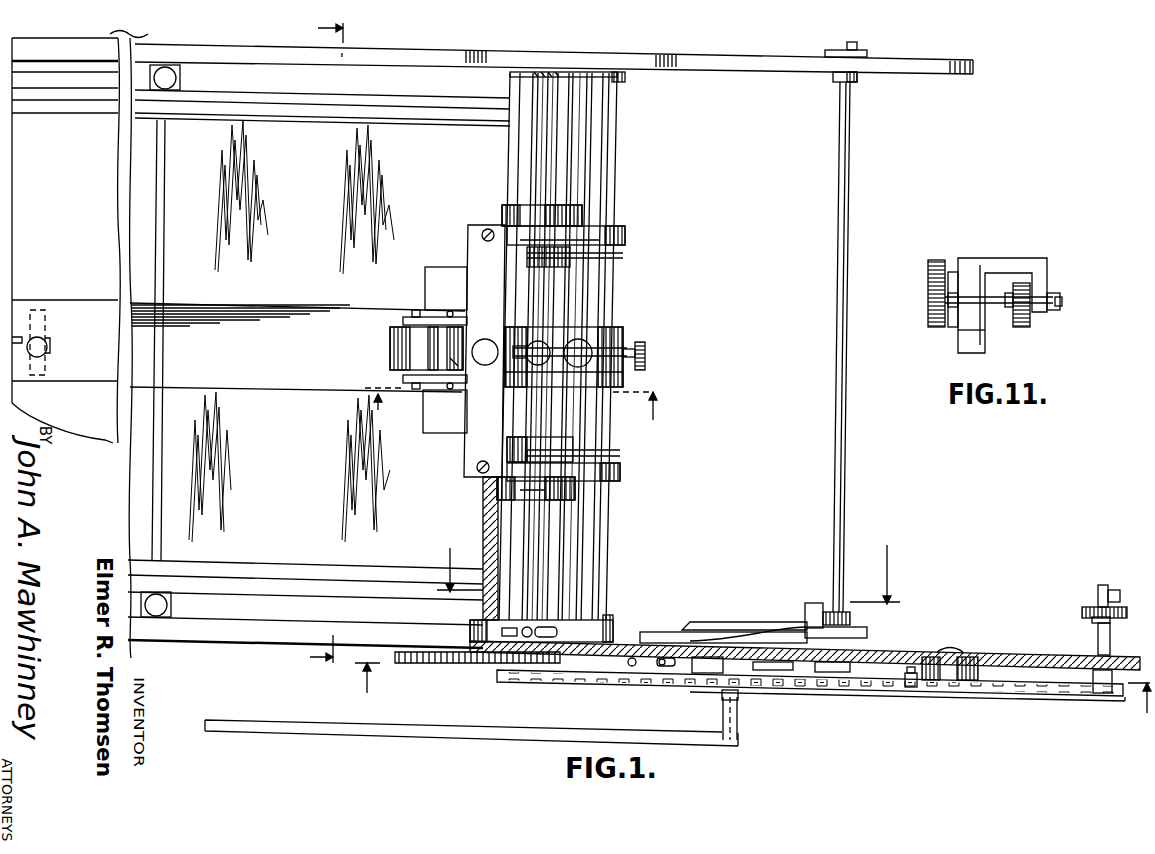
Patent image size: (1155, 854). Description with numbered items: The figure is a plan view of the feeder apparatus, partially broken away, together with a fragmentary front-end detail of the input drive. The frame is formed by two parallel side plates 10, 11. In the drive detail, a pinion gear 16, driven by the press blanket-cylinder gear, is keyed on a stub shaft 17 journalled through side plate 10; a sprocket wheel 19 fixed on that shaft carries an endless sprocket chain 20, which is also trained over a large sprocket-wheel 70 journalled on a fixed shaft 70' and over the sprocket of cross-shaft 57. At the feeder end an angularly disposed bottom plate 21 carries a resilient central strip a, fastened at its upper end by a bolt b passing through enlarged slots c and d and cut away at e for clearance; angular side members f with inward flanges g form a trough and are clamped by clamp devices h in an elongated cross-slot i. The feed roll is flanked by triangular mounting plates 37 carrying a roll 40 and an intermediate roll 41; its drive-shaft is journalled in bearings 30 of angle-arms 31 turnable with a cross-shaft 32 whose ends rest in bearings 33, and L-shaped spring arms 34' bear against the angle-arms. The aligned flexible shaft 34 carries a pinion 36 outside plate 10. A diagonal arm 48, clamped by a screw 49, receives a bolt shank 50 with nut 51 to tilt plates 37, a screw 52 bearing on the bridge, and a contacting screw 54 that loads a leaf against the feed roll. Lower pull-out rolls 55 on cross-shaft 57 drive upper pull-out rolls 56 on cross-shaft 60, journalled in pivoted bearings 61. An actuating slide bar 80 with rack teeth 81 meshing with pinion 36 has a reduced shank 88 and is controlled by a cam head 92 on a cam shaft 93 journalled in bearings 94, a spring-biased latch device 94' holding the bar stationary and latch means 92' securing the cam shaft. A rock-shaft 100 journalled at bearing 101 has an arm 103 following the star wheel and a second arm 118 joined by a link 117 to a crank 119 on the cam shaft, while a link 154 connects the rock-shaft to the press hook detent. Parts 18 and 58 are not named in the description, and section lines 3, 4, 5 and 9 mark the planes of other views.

In FIG. 1, the side plate 10 is at (882, 653).
In FIG. 11, the side plate 10 is at (960, 345).
In FIG. 1, the side plate 11 is at (792, 68).
In FIG. 1, the pinion gear 16 is at (1098, 603).
In FIG. 11, the pinion gear 16 is at (1022, 322).
In FIG. 1, the stub shaft 17 is at (1098, 632).
In FIG. 11, the stub shaft 17 is at (1000, 308).
In FIG. 1, the bracket 18 is at (1128, 590).
In FIG. 11, the bracket 18 is at (985, 272).
In FIG. 1, the sprocket wheel 19 is at (1100, 700).
In FIG. 1, the sprocket chain 20 is at (1045, 694).
In FIG. 11, the sprocket chain 20 is at (928, 302).
In FIG. 1, the bottom plate 21 is at (291, 331).
In FIG. 1, the bearings 30 is at (620, 473).
In FIG. 1, the angle-arms 31 is at (565, 490).
In FIG. 1, the cross-shaft 32 is at (598, 548).
In FIG. 1, the bearings 33 is at (608, 628).
In FIG. 1, the flexible shaft 34 is at (479, 548).
In FIG. 1, the L-shaped spring arms 34' is at (577, 354).
In FIG. 1, the pinion 36 is at (492, 664).
In FIG. 1, the mounting plates 37 is at (422, 394).
In FIG. 1, the roll 40 is at (398, 350).
In FIG. 1, the intermediate roll 41 is at (452, 365).
In FIG. 1, the diagonal arm 48 is at (516, 335).
In FIG. 1, the screw 49 is at (648, 352).
In FIG. 1, the bolt shank 50 is at (553, 345).
In FIG. 1, the nut 51 is at (548, 370).
In FIG. 1, the screw 52 is at (487, 345).
In FIG. 1, the contacting screw 54 is at (590, 352).
In FIG. 1, the lower pull-out rolls 55 is at (500, 505).
In FIG. 1, the upper pull-out rolls 56 is at (547, 500).
In FIG. 1, the cross-shaft 57 is at (522, 583).
In FIG. 1, the carriage base 58 is at (498, 632).
In FIG. 1, the cross-shaft 60 is at (553, 595).
In FIG. 1, the bearings 61 is at (560, 72).
In FIG. 1, the large sprocket-wheel 70 is at (922, 696).
In FIG. 1, the fixed shaft 70' is at (959, 693).
In FIG. 1, the actuating slide bar 80 is at (585, 666).
In FIG. 1, the rack teeth 81 is at (432, 662).
In FIG. 1, the reduced shank 88 is at (633, 668).
In FIG. 1, the cam head 92 is at (832, 695).
In FIG. 1, the latch means 92' is at (859, 35).
In FIG. 1, the cam shaft 93 is at (845, 254).
In FIG. 1, the bearings 94 is at (828, 89).
In FIG. 1, the spring-biased latch device 94' is at (670, 683).
In FIG. 1, the rock-shaft 100 is at (742, 716).
In FIG. 1, the bearing 101 is at (722, 714).
In FIG. 1, the arm 103 is at (682, 632).
In FIG. 1, the link 117 is at (746, 627).
In FIG. 1, the second arm 118 is at (757, 632).
In FIG. 1, the crank 119 is at (835, 612).
In FIG. 1, the link 154 is at (484, 735).
In FIG. 1, the section line 3 is at (519, 406).
In FIG. 1, the section line 4 is at (326, 345).
In FIG. 1, the section line 5 is at (753, 701).
In FIG. 1, the section line 9 is at (667, 574).
In FIG. 1, the strip a is at (238, 346).
In FIG. 1, the bolt b is at (42, 340).
In FIG. 1, the slot c is at (24, 340).
In FIG. 1, the slot d is at (42, 350).
In FIG. 1, the cut-away e is at (445, 350).
In FIG. 1, the side members f is at (373, 590).
In FIG. 1, the flanges g is at (298, 572).
In FIG. 1, the clamp devices h is at (160, 596).
In FIG. 1, the cross-slot i is at (162, 232).